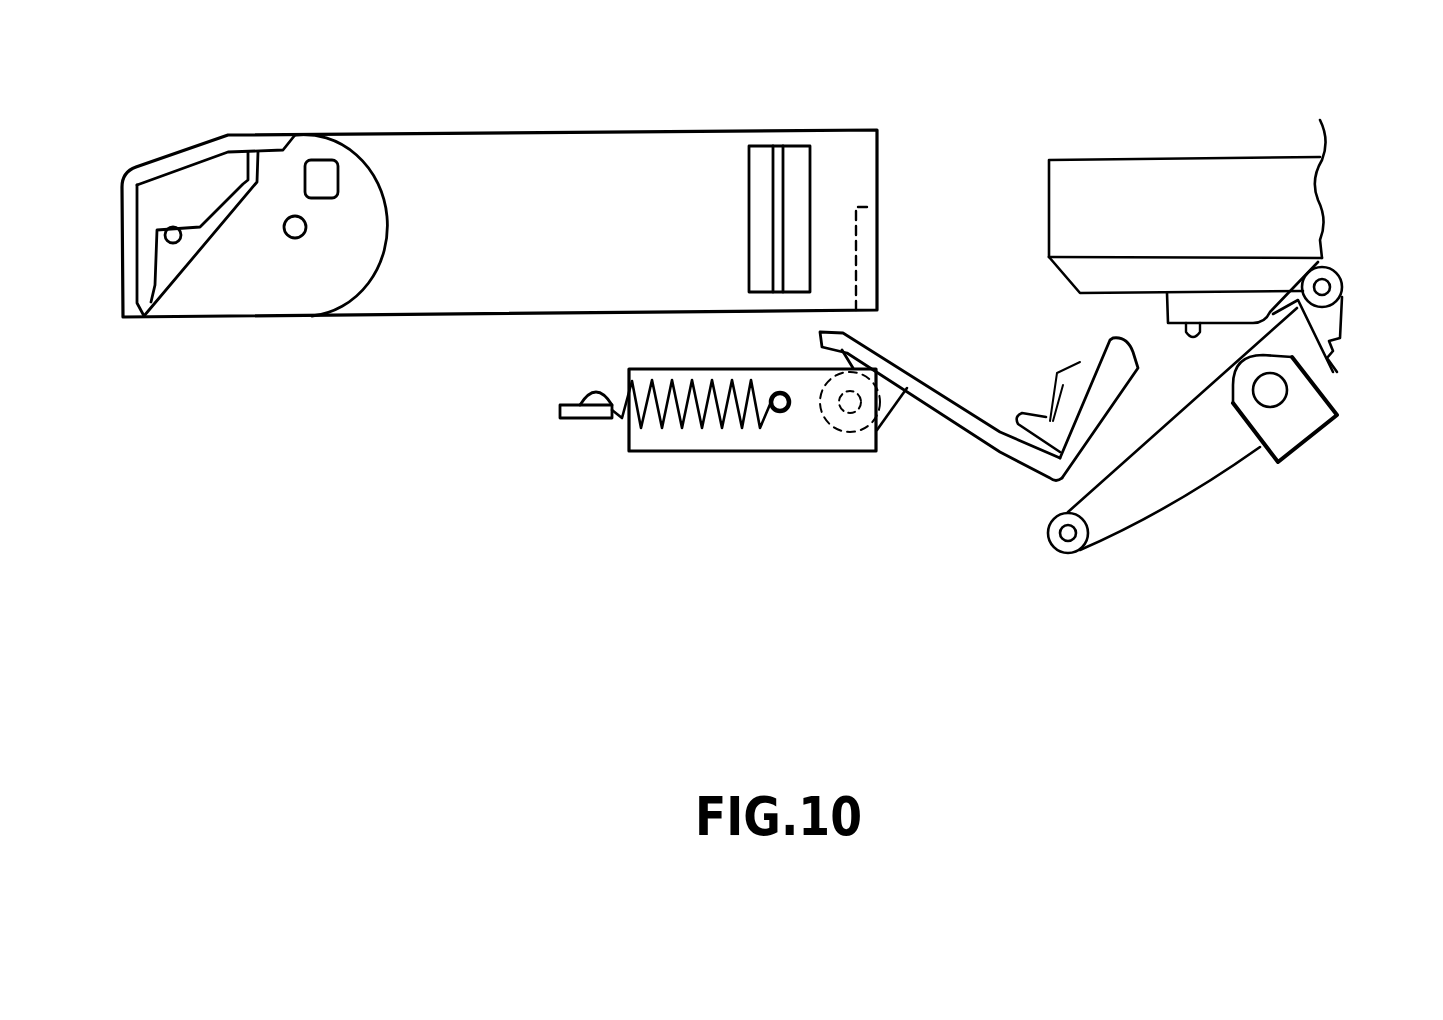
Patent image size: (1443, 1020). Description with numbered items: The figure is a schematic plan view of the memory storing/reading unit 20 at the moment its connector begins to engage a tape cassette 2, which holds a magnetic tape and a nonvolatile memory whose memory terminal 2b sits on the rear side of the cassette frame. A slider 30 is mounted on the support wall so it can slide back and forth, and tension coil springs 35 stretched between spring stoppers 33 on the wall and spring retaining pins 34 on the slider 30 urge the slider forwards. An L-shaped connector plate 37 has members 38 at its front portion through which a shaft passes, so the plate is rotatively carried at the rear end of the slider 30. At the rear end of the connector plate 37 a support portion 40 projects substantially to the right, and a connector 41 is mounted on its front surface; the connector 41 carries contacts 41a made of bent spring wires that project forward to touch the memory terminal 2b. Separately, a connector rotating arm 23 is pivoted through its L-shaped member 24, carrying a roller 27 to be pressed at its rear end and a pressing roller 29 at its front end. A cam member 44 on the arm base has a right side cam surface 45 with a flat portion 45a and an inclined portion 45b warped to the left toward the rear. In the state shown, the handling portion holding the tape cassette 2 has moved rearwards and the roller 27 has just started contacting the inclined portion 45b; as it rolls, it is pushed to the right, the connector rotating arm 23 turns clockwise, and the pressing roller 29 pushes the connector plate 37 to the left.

The tape cassette 2 is at (523, 147).
The memory terminal 2b is at (860, 207).
The memory storing/reading unit 20 is at (870, 568).
The connector rotating arm 23 is at (1112, 517).
The member to be supported 24 is at (1300, 423).
The roller to be pressed 27 is at (1335, 268).
The pressing roller 29 is at (1053, 550).
The slider 30 is at (720, 452).
The spring stopper 33 is at (570, 410).
The spring retaining pin 34 is at (783, 408).
The tension coil spring 35 is at (665, 422).
The connector plate 37 is at (1000, 453).
The member to be supported 38 is at (887, 395).
The support portion 40 is at (1118, 388).
The connector 41 is at (1088, 392).
The contacts 41a is at (1050, 418).
The cam member 44 is at (1197, 173).
The cam surface 45 is at (1200, 323).
The flat portion 45a is at (1220, 323).
The inclined portion 45b is at (1337, 380).